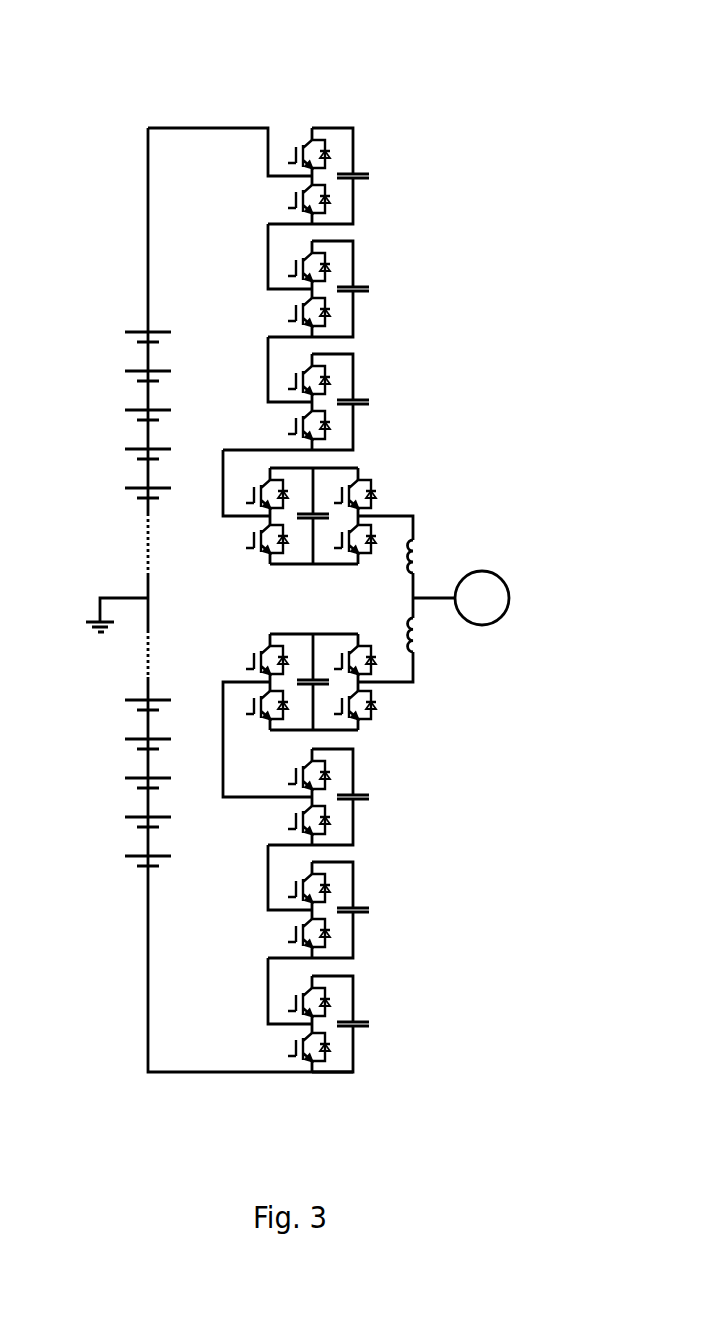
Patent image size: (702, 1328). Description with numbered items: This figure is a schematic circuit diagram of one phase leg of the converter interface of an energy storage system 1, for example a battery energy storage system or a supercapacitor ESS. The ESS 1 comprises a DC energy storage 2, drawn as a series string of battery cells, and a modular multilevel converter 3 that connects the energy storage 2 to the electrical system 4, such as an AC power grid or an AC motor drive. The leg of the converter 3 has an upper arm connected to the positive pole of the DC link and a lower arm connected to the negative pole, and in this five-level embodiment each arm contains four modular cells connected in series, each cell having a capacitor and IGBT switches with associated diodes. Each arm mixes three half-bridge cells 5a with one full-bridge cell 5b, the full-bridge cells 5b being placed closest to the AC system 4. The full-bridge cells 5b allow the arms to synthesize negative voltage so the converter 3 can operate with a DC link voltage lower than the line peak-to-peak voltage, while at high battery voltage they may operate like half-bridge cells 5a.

The energy storage system 1 is at (70, 70).
The energy storage 2 is at (93, 413).
The modular multilevel converter 3 is at (532, 262).
The electrical system 4 is at (497, 576).
The half-bridge cell 5a is at (382, 157).
The full-bridge cell 5b is at (390, 485).